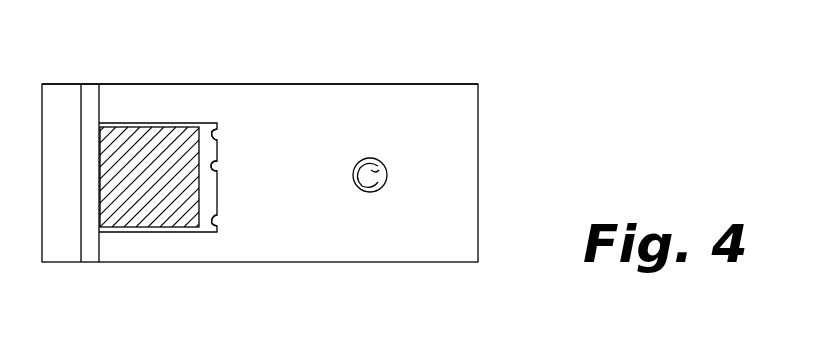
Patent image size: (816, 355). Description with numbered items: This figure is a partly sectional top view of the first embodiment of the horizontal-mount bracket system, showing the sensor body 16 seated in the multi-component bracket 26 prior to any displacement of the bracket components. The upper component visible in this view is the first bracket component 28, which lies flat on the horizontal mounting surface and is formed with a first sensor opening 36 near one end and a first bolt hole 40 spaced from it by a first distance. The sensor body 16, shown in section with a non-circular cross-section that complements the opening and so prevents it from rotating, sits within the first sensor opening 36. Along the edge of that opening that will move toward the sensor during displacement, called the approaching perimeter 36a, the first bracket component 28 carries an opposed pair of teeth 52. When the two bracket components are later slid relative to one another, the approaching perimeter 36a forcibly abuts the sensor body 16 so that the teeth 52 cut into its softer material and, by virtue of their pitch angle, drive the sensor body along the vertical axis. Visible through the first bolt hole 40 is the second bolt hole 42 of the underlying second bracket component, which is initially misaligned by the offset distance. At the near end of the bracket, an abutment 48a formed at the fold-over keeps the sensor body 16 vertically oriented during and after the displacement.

The sensor body 16 is at (154, 123).
The multi-component bracket 26 is at (222, 263).
The first bracket component 28 is at (263, 84).
The first sensor opening 36 is at (123, 127).
The approaching perimeter 36a is at (211, 160).
The first bolt hole 40 is at (372, 158).
The second bolt hole 42 is at (362, 192).
The abutment 48a is at (90, 263).
The teeth 52 is at (217, 140).